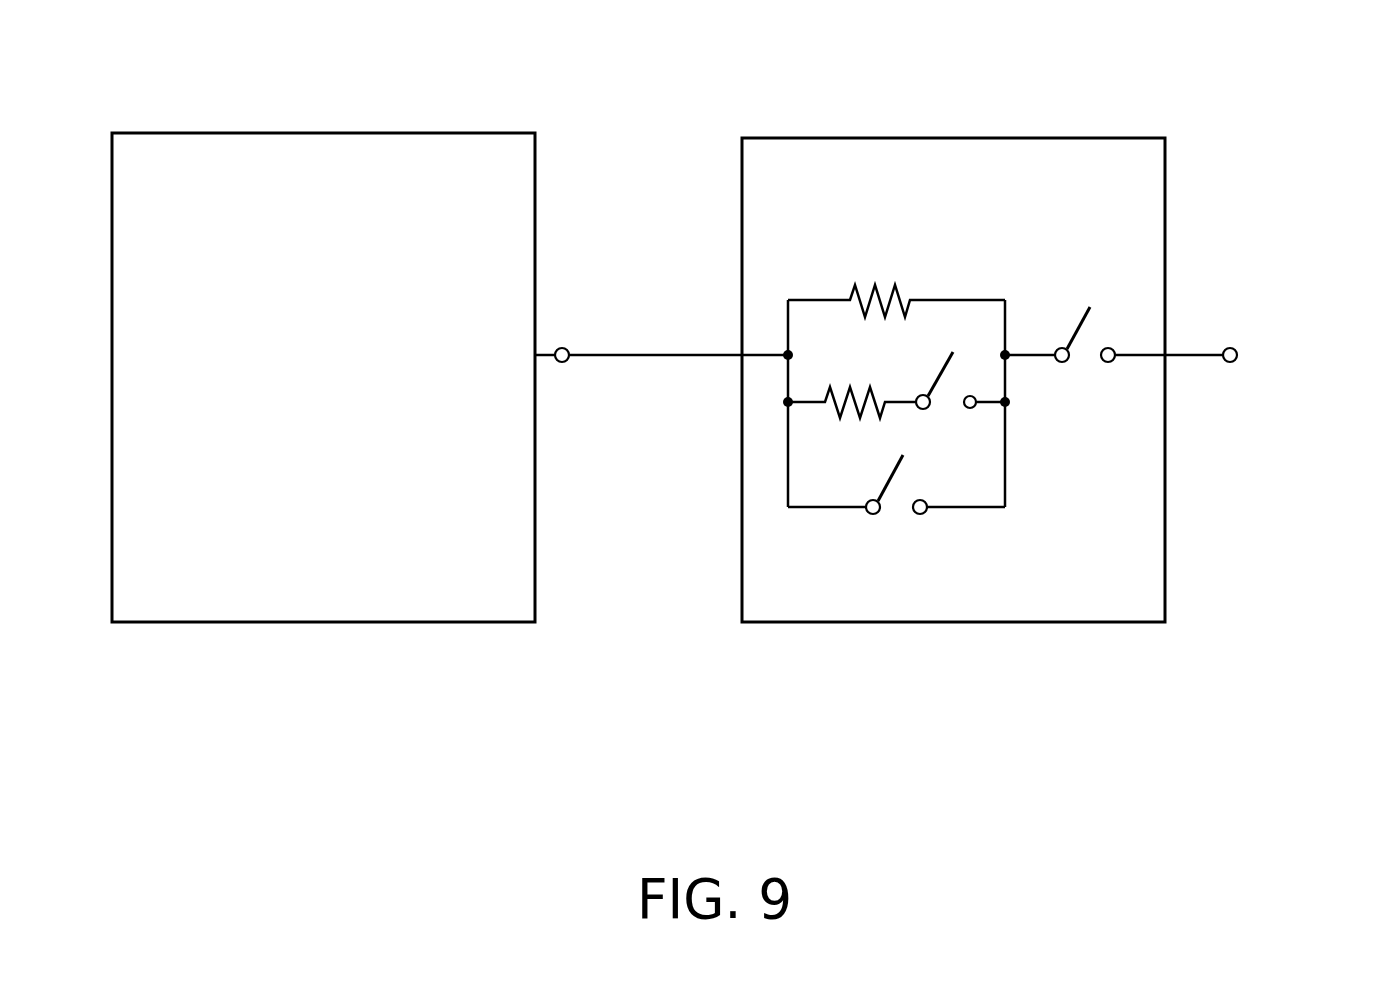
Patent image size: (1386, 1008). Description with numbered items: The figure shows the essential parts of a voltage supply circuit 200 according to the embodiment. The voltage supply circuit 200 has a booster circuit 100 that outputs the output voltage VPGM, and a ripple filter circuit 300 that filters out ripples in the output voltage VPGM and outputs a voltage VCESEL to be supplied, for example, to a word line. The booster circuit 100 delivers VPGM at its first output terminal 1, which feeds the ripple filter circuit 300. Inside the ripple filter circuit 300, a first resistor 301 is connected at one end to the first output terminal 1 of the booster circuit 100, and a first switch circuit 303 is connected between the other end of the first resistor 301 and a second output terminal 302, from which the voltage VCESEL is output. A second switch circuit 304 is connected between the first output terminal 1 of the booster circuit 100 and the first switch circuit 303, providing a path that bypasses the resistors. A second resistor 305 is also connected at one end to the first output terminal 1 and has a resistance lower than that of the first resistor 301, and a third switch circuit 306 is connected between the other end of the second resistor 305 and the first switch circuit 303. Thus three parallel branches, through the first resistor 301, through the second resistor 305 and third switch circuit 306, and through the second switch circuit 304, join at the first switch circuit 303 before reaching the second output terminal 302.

The first output terminal 1 is at (562, 363).
The booster circuit 100 is at (325, 133).
The voltage supply circuit 200 is at (747, 787).
The ripple filter circuit 300 is at (952, 138).
The first resistor 301 is at (882, 288).
The second output terminal 302 is at (1230, 363).
The first switch circuit 303 is at (1071, 322).
The second switch circuit 304 is at (897, 513).
The second resistor 305 is at (852, 388).
The third switch circuit 306 is at (936, 372).